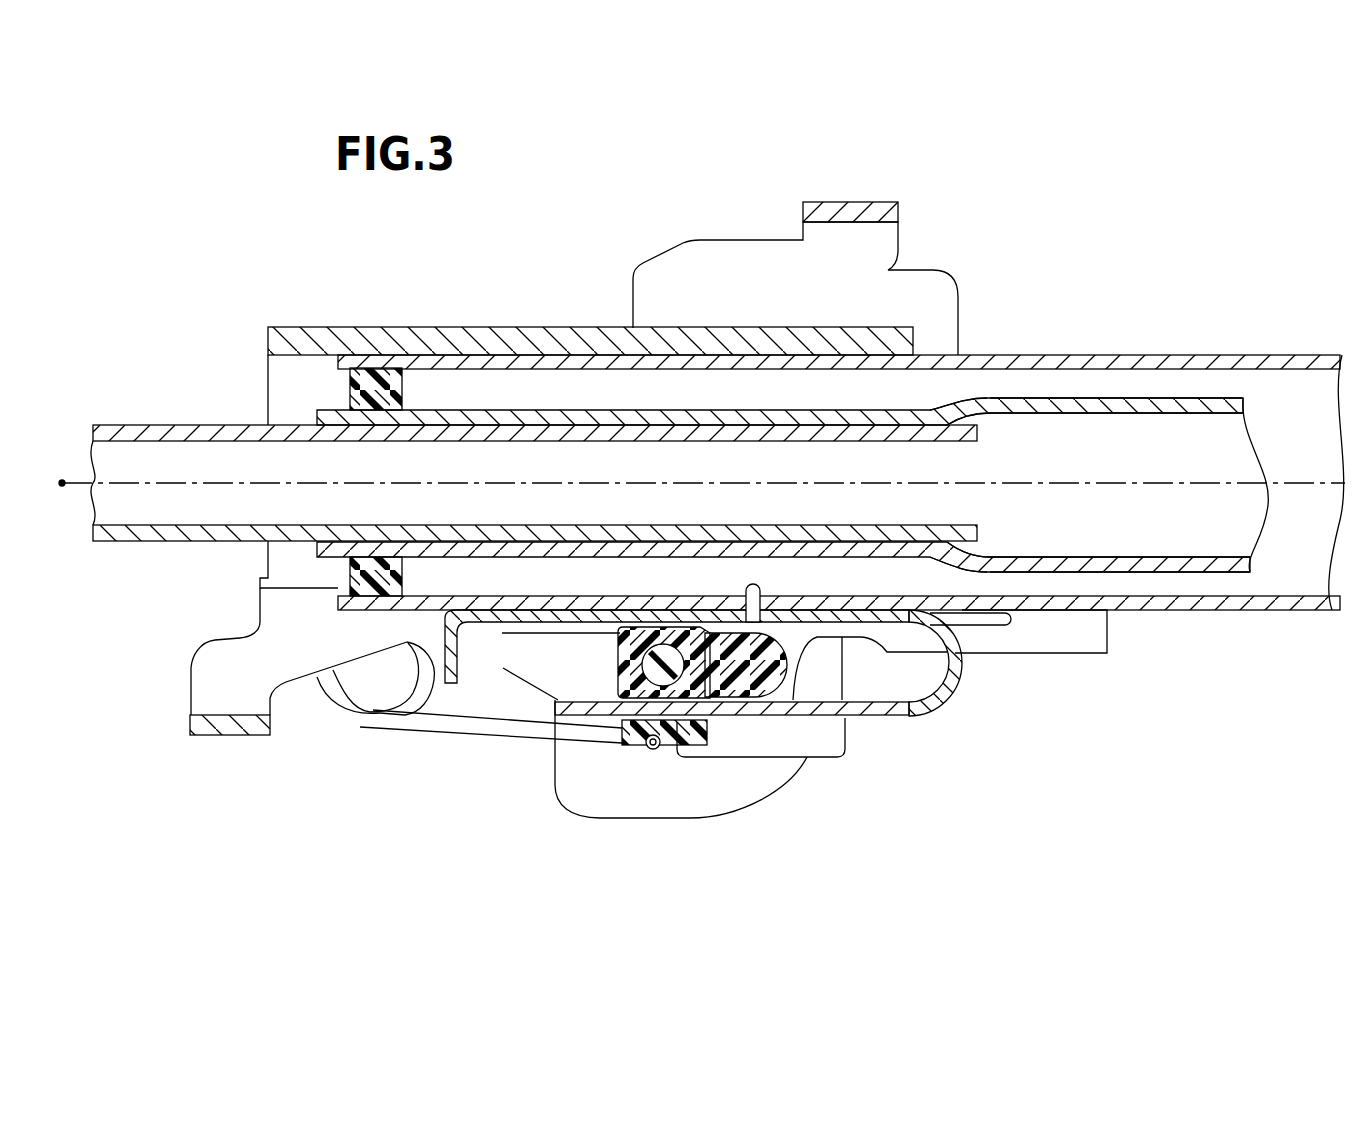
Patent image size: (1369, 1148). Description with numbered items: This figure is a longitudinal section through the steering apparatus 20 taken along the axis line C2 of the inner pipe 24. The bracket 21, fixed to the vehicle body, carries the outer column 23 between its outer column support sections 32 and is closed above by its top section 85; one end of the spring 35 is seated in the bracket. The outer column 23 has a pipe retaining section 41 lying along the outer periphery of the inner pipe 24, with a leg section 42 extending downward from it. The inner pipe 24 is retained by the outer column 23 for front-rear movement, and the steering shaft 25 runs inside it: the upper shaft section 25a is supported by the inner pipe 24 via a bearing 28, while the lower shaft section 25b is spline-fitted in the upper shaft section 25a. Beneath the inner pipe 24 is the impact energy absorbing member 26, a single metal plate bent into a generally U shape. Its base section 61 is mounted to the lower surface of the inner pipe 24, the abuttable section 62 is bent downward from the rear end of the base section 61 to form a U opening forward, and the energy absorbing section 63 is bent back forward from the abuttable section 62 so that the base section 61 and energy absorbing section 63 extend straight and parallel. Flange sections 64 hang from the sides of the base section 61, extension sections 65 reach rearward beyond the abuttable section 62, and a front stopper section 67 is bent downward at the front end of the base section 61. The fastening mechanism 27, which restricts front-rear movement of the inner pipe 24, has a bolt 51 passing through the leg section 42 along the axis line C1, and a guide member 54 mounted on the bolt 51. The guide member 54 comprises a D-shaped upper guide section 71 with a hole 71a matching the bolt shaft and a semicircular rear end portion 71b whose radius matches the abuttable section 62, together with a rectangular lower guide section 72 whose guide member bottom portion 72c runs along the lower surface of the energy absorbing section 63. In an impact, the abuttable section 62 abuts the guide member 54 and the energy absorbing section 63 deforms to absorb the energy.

The steering apparatus 20 is at (1275, 229).
The bracket 21 is at (714, 240).
The outer column 23 is at (524, 326).
The inner pipe 24 is at (1128, 357).
The steering shaft 25 is at (1093, 288).
The upper shaft section 25a is at (1030, 398).
The lower shaft section 25b is at (910, 423).
The impact energy absorbing member 26 is at (938, 712).
The fastening mechanism 27 is at (741, 704).
The bearing 28 is at (350, 388).
The outer column support section 32 is at (667, 816).
The spring 35 is at (348, 715).
The pipe retaining section 41 is at (436, 327).
The leg section 42 is at (530, 665).
The bolt 51 is at (615, 735).
The guide member 54 is at (698, 682).
The base section 61 is at (578, 608).
The abuttable section 62 is at (963, 667).
The energy absorbing section 63 is at (880, 718).
The flange section 64 is at (527, 630).
The extension section 65 is at (1093, 633).
The front stopper section 67 is at (440, 677).
The upper guide section 71 is at (620, 650).
The hole 71a is at (660, 645).
The rear end portion 71b is at (815, 672).
The lower guide section 72 is at (623, 742).
The guide member bottom portion 72c is at (650, 750).
The top section 85 is at (847, 202).
The axis line of the bolt C1 is at (667, 668).
The axis line of the inner pipe C2 is at (62, 483).